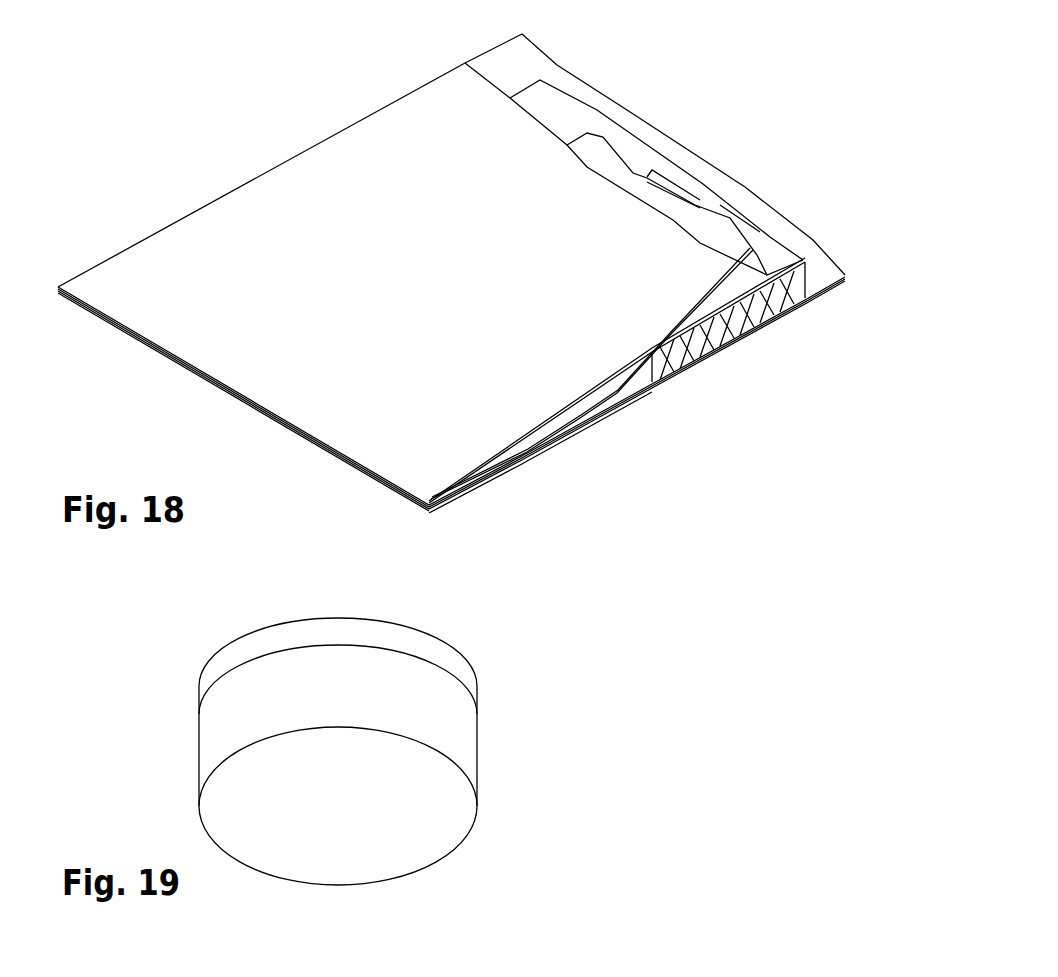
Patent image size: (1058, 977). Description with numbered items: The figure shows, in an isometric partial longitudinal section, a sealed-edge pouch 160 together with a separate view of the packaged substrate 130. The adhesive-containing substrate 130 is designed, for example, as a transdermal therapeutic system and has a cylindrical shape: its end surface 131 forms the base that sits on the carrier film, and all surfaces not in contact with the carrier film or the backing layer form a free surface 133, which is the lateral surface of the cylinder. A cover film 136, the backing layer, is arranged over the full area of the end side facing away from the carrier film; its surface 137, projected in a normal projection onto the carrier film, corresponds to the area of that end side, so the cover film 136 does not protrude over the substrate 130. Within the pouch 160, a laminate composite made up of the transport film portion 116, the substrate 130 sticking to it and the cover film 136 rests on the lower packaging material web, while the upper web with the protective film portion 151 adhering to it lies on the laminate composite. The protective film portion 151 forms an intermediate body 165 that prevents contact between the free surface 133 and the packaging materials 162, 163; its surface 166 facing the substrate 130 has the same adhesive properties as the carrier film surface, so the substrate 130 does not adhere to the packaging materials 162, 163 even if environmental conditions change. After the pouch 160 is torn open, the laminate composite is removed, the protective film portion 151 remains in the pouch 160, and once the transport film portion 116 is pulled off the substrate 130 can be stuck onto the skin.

In FIG. 18, the packaging material 163 is at (461, 86).
In FIG. 18, the packaging material 162 is at (585, 92).
In FIG. 18, the protective film portion 151 is at (593, 152).
In FIG. 18, the surface of the cover film 137 is at (695, 202).
In FIG. 18, the transport film portion 116 is at (743, 217).
In FIG. 18, the sealed-edge pouch 160 is at (815, 305).
In FIG. 18, the cover film 136 is at (747, 300).
In FIG. 19, the cover film 136 is at (425, 650).
In FIG. 18, the adhesive-containing substrate 130 is at (693, 340).
In FIG. 19, the adhesive-containing substrate 130 is at (485, 770).
In FIG. 18, the free surface 133 is at (647, 363).
In FIG. 19, the free surface 133 is at (418, 706).
In FIG. 18, the surface of the intermediate body facing the substrate 166 is at (617, 393).
In FIG. 18, the intermediate body 165 is at (558, 437).
In FIG. 19, the end surface 131 is at (411, 810).